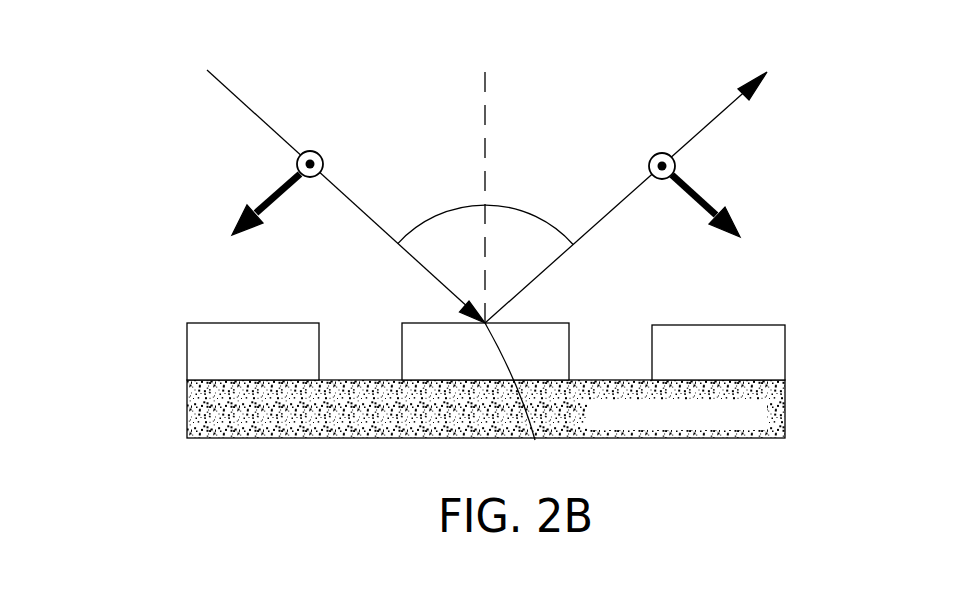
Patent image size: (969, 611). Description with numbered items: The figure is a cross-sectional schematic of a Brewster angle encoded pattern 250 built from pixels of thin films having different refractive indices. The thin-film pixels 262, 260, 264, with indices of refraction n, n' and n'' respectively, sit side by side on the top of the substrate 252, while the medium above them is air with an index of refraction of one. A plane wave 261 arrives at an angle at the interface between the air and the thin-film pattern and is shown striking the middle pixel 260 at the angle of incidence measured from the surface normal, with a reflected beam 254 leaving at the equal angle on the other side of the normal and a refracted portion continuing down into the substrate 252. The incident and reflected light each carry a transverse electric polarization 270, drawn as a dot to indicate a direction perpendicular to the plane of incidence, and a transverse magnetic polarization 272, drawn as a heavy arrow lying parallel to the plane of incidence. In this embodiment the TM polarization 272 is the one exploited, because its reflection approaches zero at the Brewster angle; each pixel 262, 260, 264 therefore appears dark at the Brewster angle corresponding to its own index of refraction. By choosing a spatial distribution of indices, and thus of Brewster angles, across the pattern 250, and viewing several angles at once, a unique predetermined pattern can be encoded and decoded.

The pattern 250 is at (89, 42).
The substrate 252 is at (787, 401).
The reflected beam 254 is at (710, 122).
The thin film pixel 260 is at (430, 323).
The plane wave 261 is at (230, 88).
The thin film pixel 262 is at (187, 350).
The thin film pixel 264 is at (787, 347).
The transverse electric (TE) polarization 270 is at (324, 162).
The transverse magnetic (TM) polarization 272 is at (243, 215).